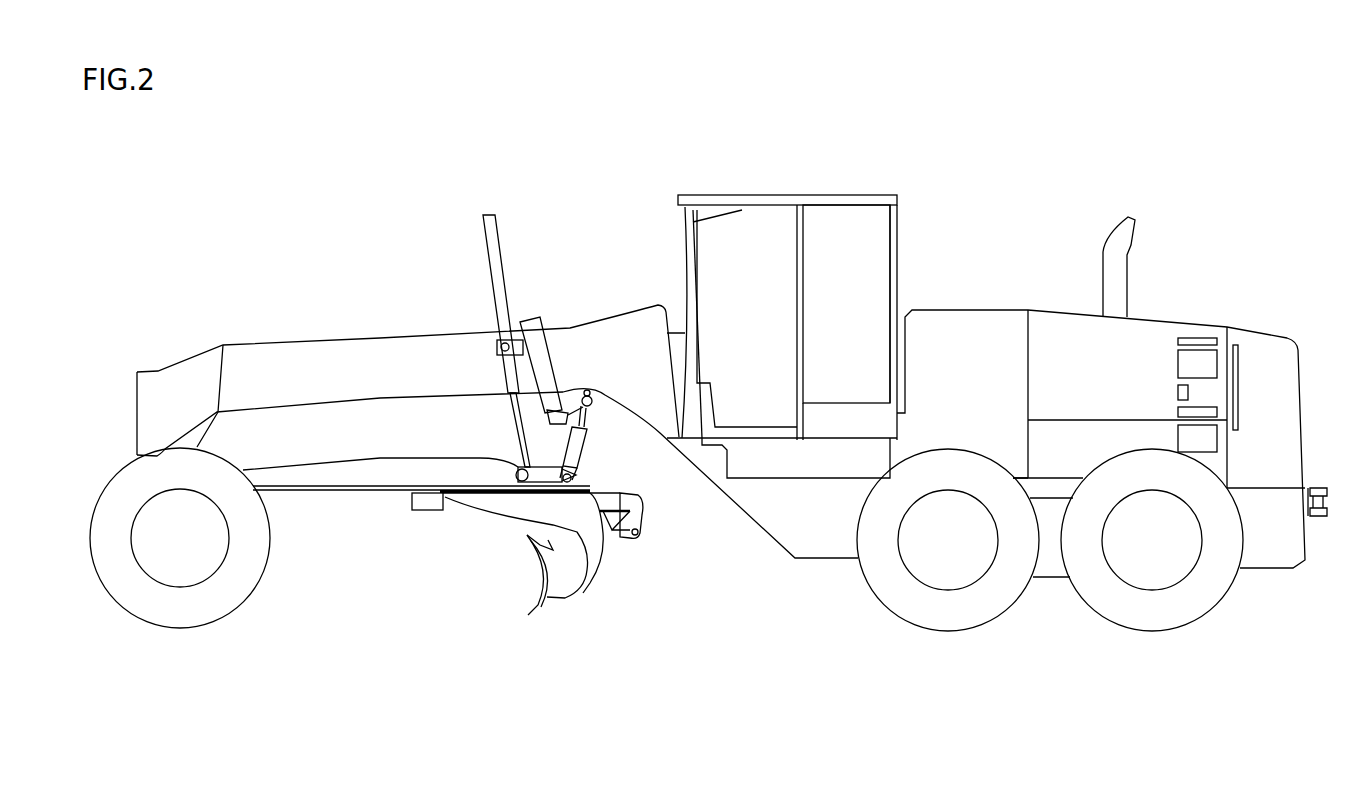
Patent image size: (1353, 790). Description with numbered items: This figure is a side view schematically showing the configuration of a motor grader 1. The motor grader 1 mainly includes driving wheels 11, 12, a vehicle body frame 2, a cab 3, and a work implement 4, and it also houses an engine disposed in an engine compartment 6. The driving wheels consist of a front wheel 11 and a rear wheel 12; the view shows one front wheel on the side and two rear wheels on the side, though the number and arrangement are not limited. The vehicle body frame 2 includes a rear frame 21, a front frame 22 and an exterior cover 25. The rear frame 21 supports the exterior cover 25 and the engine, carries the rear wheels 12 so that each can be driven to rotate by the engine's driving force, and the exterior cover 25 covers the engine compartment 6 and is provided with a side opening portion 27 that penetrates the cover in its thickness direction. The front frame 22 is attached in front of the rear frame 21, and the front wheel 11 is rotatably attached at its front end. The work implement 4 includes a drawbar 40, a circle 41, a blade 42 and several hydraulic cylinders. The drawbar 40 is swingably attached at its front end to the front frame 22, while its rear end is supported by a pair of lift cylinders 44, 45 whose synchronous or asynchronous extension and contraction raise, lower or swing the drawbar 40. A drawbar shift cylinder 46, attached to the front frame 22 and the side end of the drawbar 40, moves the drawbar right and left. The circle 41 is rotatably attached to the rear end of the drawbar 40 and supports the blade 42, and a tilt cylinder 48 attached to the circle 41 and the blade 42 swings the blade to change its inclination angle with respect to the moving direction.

The motor grader 1 is at (375, 163).
The vehicle body frame 2 is at (587, 263).
The cab 3 is at (843, 193).
The work implement 4 is at (465, 580).
The engine compartment 6 is at (1062, 370).
The front wheel 11 is at (182, 607).
The rear wheel 12 is at (948, 612).
The rear frame 21 is at (1050, 555).
The front frame 22 is at (315, 372).
The exterior cover 25 is at (1150, 318).
The side opening portion 27 is at (1197, 363).
The drawbar 40 is at (338, 490).
The circle 41 is at (428, 500).
The blade 42 is at (537, 593).
The lift cylinder 44 is at (498, 348).
The lift cylinder 45 is at (493, 253).
The drawbar shift cylinder 46 is at (577, 458).
The tilt cylinder 48 is at (610, 535).